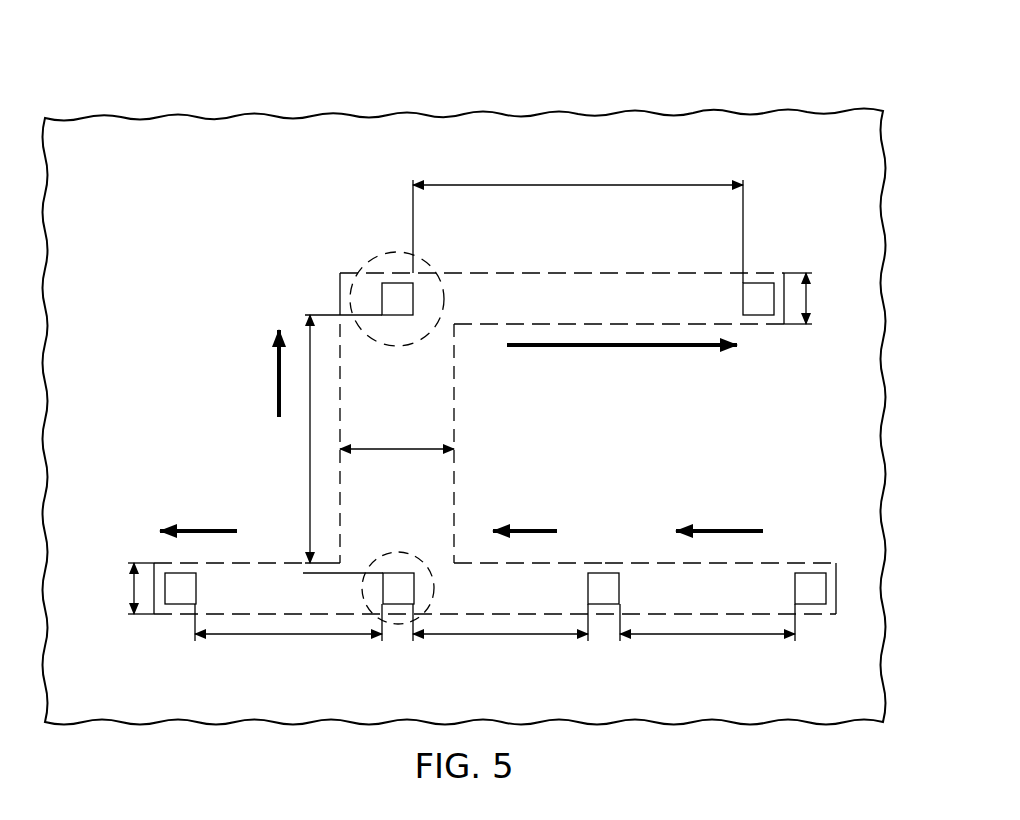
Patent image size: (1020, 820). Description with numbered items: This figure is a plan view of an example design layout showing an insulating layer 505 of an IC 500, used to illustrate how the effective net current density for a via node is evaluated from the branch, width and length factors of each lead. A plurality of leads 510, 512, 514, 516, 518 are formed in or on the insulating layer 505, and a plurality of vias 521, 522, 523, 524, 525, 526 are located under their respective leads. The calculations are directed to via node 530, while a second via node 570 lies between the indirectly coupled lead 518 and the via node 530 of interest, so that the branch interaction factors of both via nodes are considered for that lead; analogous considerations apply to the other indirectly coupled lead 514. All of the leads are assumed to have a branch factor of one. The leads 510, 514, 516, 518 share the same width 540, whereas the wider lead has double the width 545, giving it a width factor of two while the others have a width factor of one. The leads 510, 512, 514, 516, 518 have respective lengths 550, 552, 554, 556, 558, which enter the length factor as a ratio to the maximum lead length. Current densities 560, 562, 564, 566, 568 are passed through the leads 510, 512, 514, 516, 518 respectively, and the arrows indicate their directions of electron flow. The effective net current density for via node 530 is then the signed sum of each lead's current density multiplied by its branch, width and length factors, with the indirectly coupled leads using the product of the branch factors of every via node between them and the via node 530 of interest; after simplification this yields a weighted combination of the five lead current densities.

The IC 500 is at (464, 379).
The insulating layer 505 is at (602, 108).
The lead 510 is at (490, 580).
The lead 512 is at (602, 527).
The lead 514 is at (799, 536).
The lead 516 is at (396, 439).
The lead 518 is at (544, 239).
The via 521 is at (743, 305).
The via 522 is at (413, 305).
The via 523 is at (182, 605).
The via 524 is at (414, 587).
The via 525 is at (620, 585).
The via 526 is at (795, 583).
The via node 530 is at (398, 551).
The width 540 is at (808, 299).
The width 545 is at (398, 447).
The length 550 is at (290, 637).
The length 552 is at (500, 637).
The length 554 is at (705, 637).
The length 556 is at (308, 460).
The length 558 is at (578, 182).
The current density 560 is at (197, 529).
The current density 562 is at (528, 529).
The current density 564 is at (722, 529).
The current density 566 is at (276, 375).
The current density 568 is at (632, 348).
The via node 570 is at (364, 266).